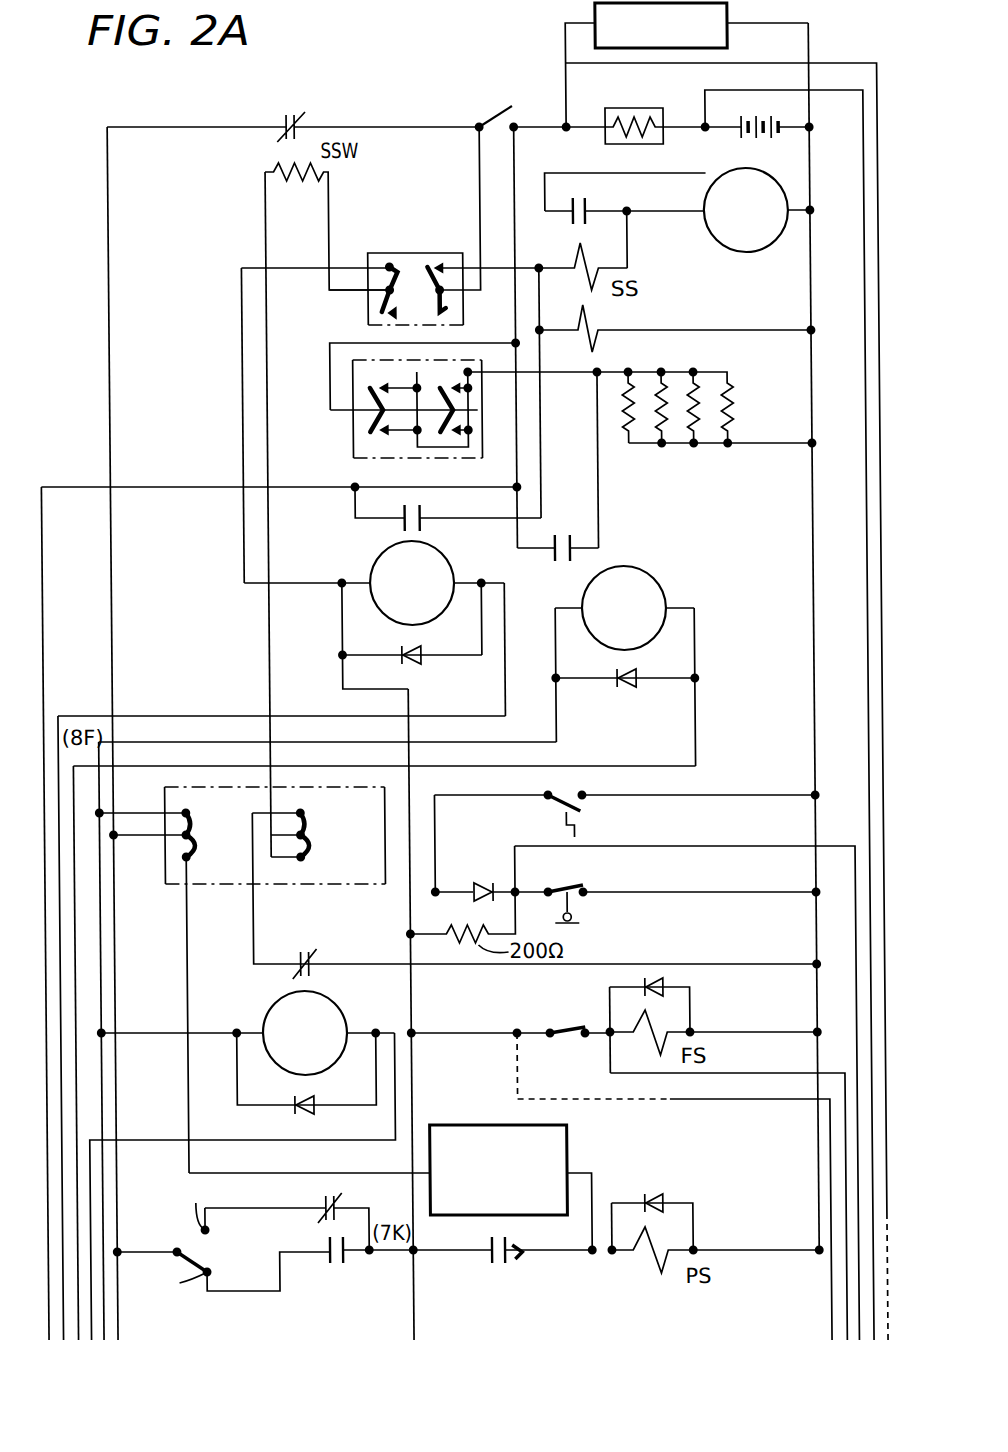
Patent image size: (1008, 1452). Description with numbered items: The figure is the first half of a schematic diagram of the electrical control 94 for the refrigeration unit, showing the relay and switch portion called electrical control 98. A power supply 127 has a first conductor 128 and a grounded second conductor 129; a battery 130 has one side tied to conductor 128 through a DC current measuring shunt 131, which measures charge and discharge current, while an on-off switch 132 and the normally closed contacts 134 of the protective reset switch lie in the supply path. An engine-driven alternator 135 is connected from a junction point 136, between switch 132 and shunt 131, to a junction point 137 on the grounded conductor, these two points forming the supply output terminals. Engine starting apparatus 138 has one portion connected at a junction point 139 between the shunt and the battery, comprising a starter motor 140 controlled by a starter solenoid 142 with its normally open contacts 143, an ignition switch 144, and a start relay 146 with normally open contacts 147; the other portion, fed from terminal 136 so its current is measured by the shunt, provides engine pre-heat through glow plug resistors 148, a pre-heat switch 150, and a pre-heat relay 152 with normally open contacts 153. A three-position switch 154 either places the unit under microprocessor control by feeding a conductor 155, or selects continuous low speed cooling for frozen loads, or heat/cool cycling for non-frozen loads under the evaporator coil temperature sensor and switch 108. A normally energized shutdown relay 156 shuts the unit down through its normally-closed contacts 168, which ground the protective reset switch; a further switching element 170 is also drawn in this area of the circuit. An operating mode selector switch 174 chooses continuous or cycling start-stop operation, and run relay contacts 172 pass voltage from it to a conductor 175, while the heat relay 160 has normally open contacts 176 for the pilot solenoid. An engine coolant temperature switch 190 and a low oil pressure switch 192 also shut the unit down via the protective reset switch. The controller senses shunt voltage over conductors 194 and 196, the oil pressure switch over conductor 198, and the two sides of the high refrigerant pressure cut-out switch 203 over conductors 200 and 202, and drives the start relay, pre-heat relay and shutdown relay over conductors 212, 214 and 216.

The electrical control 94 is at (369, 44).
The electrical control 98 is at (383, 114).
The evaporator coil temperature sensor and switch 108 is at (558, 1148).
The power supply 127 is at (779, 59).
The first power supply conductor 128 is at (104, 147).
The second power supply conductor 129 is at (842, 205).
The battery 130 is at (758, 140).
The DC current measuring shunt 131 is at (645, 107).
The on-off switch 132 is at (509, 106).
The normally closed contacts 134 is at (290, 113).
The alternator 135 is at (594, 23).
The junction point 136 is at (564, 126).
The junction point 137 is at (810, 128).
The engine starting apparatus 138 is at (695, 246).
The junction point 139 is at (703, 125).
The starter motor 140 is at (748, 252).
The starter solenoid 142 is at (577, 312).
The normally open contacts 143 is at (578, 200).
The ignition switch 144 is at (407, 253).
The start relay 146 is at (495, 594).
The normally open contacts 147 is at (399, 525).
The glow plug resistors 148 is at (726, 378).
The pre-heat switch 150 is at (349, 440).
The pre-heat relay 152 is at (715, 592).
The normally open contacts 153 is at (566, 533).
The three-position switch 154 is at (212, 884).
The conductor 155 is at (104, 1004).
The shutdown relay 156 is at (376, 1017).
The heat relay 160 is at (556, 1287).
The normally-closed contacts 168 is at (300, 950).
The switch 170 is at (319, 1200).
The normally open contacts 172 is at (323, 1270).
The operating mode selector switch 174 is at (159, 1242).
The conductor 175 is at (406, 1058).
The normally open contacts 176 is at (459, 1261).
The engine coolant temperature switch 190 is at (555, 805).
The low oil pressure switch 192 is at (578, 903).
The conductor 194 is at (824, 62).
The conductor 196 is at (842, 92).
The conductor 198 is at (726, 845).
The conductor 200 is at (726, 1073).
The conductor 202 is at (738, 1100).
The high refrigerant pressure cut-out switch 203 is at (570, 1036).
The conductor 212 is at (53, 1331).
The conductor 214 is at (67, 1312).
The conductor 216 is at (127, 1140).